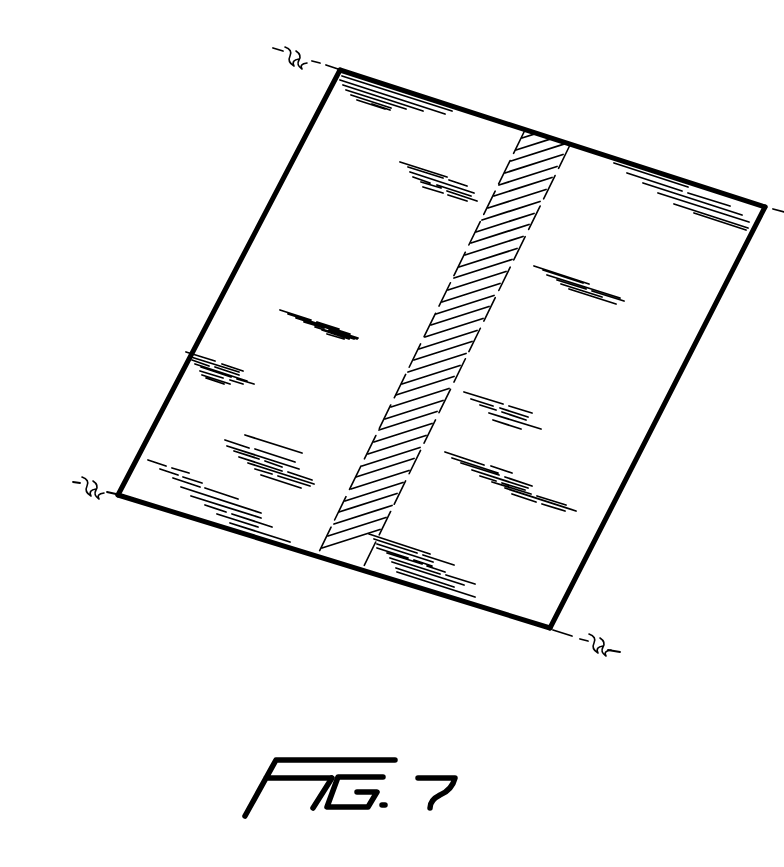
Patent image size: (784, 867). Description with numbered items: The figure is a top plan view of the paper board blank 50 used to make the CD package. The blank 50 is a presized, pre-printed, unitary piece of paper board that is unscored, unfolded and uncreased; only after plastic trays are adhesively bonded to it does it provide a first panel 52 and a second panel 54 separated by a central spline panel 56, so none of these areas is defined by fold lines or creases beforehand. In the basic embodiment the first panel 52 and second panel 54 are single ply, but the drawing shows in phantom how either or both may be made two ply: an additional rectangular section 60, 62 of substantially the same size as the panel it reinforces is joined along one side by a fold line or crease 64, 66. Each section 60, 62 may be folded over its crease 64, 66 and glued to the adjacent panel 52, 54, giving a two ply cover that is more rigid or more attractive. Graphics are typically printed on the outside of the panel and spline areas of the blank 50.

The blank 50 is at (410, 590).
The first panel 52 is at (354, 284).
The second panel 54 is at (578, 360).
The spline panel 56 is at (483, 262).
The additional rectangular section 60 is at (214, 196).
The additional rectangular section 62 is at (745, 414).
The fold line or crease 64 is at (262, 217).
The fold line or crease 66 is at (668, 393).